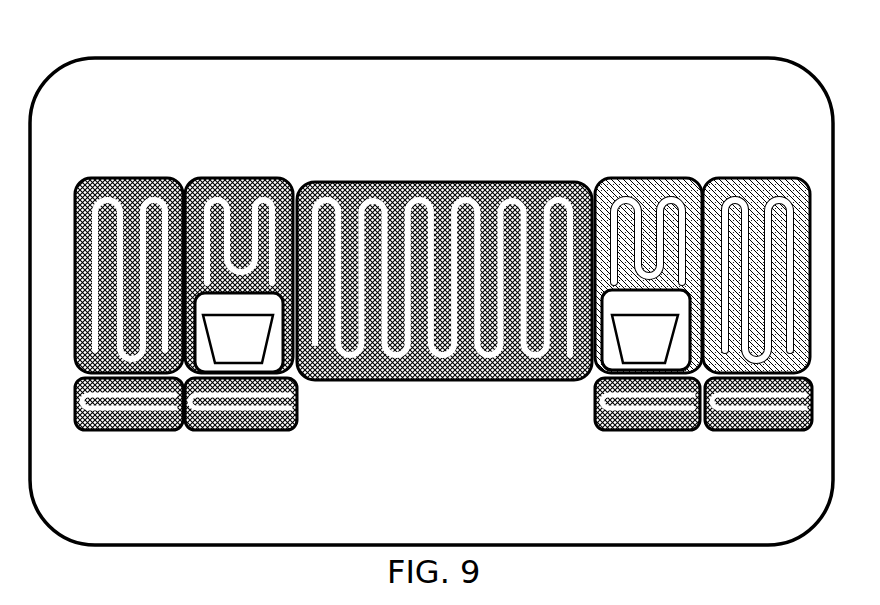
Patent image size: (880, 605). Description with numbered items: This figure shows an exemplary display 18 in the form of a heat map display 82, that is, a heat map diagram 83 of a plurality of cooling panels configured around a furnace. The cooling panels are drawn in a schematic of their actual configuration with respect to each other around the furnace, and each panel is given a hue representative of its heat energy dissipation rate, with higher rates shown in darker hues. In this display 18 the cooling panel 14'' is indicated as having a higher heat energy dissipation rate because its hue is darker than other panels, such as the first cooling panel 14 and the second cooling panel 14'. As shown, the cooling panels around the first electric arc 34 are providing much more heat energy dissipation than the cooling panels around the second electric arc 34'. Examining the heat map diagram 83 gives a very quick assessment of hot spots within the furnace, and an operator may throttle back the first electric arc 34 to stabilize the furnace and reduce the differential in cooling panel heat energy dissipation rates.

The display 18 is at (112, 77).
The heat map diagram 83 is at (157, 77).
The heat map display 82 is at (530, 140).
The first cooling panel 14 is at (290, 269).
The second cooling panel 14' is at (444, 239).
The cooling panel 14'' is at (283, 434).
The first electric arc 34 is at (295, 361).
The second electric arc 34' is at (593, 382).